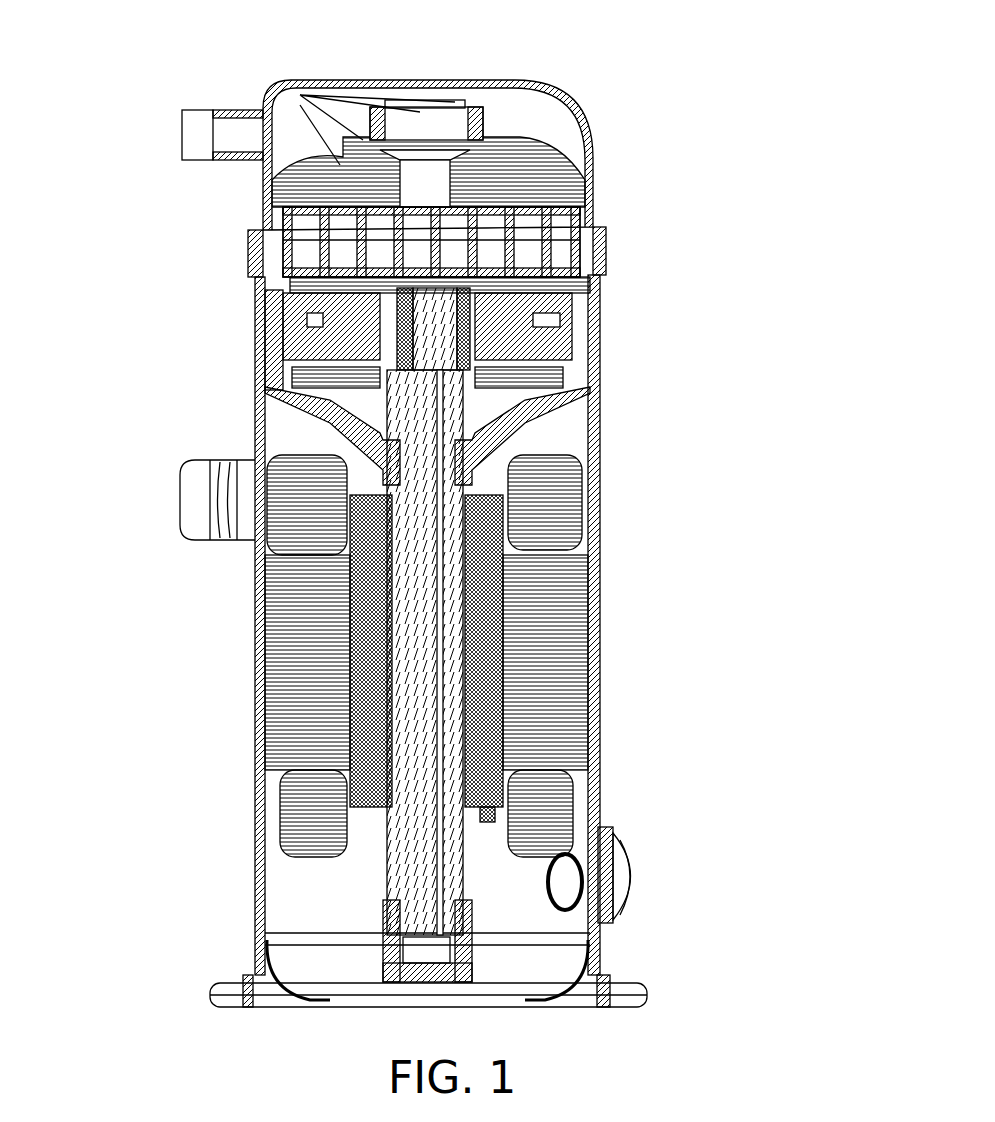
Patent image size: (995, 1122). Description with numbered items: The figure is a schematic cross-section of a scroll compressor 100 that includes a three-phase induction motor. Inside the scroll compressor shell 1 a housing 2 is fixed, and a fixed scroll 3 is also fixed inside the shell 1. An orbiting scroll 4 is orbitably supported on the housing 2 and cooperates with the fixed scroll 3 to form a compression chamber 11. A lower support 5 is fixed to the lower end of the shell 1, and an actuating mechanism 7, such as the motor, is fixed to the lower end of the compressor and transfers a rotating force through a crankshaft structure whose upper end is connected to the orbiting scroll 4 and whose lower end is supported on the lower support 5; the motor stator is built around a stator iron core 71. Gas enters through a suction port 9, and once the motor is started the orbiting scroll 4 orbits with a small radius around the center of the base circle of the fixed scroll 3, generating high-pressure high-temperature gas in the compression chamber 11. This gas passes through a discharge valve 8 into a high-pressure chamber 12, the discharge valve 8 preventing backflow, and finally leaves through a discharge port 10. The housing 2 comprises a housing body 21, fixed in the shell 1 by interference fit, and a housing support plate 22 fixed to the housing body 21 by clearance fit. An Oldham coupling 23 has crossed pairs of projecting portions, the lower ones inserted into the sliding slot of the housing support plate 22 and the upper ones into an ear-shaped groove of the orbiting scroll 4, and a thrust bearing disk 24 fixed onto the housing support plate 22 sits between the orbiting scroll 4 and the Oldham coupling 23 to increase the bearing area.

The scroll compressor 100 is at (497, 50).
The scroll compressor shell 1 is at (600, 528).
The housing 2 is at (567, 376).
The fixed scroll 3 is at (560, 182).
The orbiting scroll 4 is at (595, 283).
The lower support 5 is at (387, 915).
The actuating mechanism 7 is at (285, 748).
The stator iron core 71 is at (445, 617).
The discharge valve 8 is at (487, 107).
The suction port 9 is at (179, 514).
The discharge port 10 is at (200, 150).
The compression chamber 11 is at (262, 252).
The high-pressure chamber 12 is at (350, 118).
The housing body 21 is at (525, 430).
The housing support plate 22 is at (595, 337).
The Oldham coupling 23 is at (267, 323).
The thrust bearing disk 24 is at (595, 303).